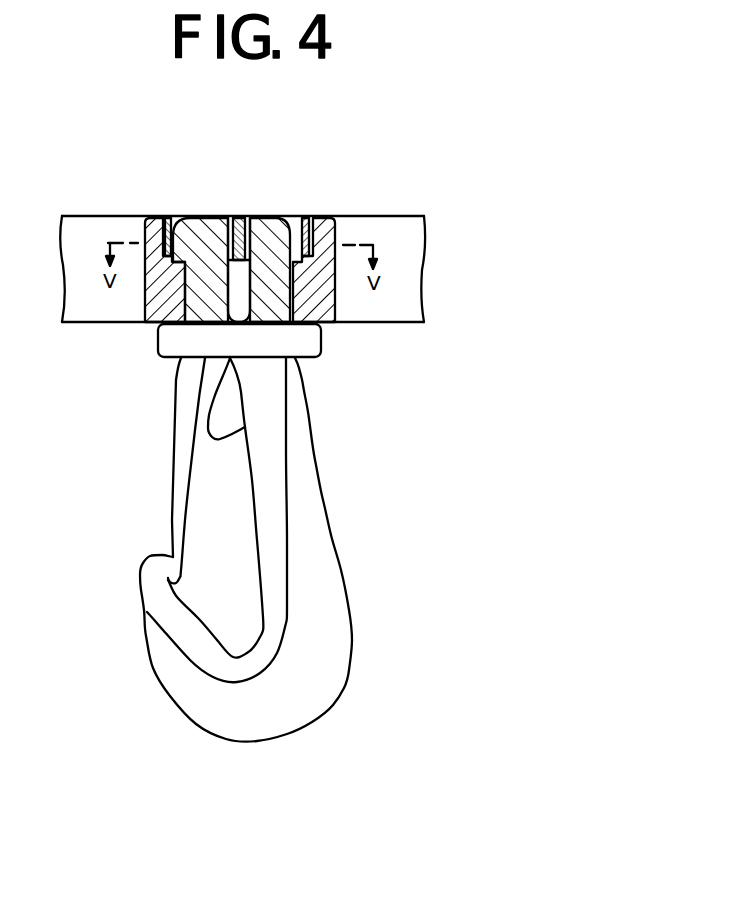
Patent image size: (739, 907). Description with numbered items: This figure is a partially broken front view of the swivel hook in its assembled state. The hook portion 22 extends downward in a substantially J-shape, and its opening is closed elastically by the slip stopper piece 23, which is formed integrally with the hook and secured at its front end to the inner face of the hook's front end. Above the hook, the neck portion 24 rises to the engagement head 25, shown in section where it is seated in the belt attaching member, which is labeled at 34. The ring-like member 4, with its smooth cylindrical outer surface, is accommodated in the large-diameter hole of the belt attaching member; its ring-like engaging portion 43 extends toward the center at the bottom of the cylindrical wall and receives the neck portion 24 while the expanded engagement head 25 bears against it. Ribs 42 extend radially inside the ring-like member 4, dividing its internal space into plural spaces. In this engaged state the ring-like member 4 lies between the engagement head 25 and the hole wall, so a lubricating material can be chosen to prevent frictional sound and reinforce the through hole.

The ring-like member 4 is at (169, 208).
The ribs 42 is at (240, 215).
The engagement head 25 is at (277, 236).
The ring-like engaging portion 43 is at (299, 250).
The neck portion 24 is at (286, 296).
The panel 34 is at (366, 322).
The slip stopper piece 23 is at (177, 484).
The hook portion 22 is at (300, 712).